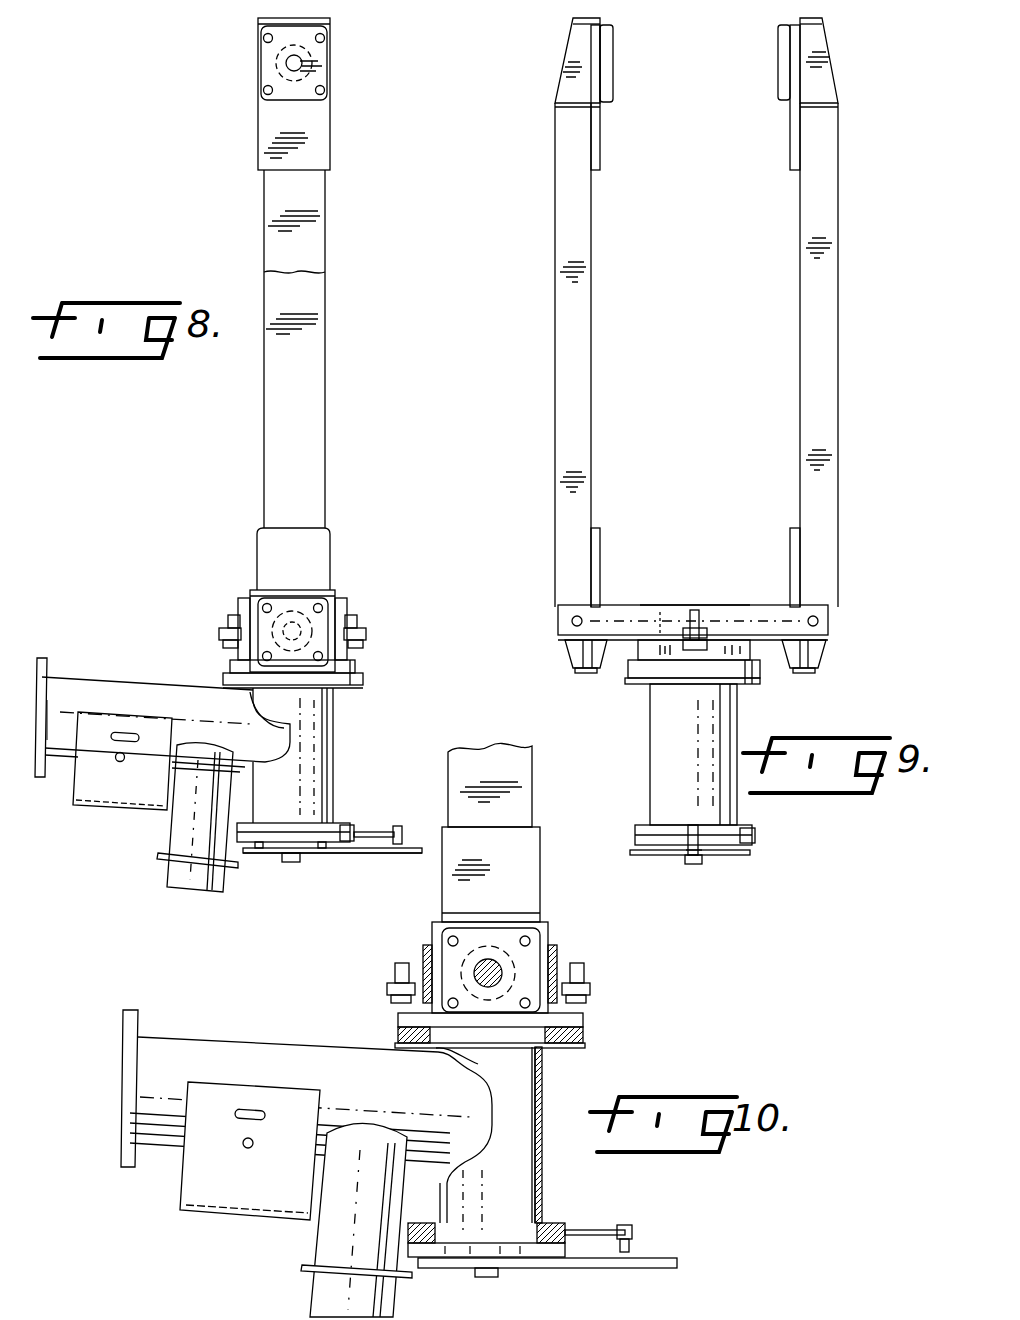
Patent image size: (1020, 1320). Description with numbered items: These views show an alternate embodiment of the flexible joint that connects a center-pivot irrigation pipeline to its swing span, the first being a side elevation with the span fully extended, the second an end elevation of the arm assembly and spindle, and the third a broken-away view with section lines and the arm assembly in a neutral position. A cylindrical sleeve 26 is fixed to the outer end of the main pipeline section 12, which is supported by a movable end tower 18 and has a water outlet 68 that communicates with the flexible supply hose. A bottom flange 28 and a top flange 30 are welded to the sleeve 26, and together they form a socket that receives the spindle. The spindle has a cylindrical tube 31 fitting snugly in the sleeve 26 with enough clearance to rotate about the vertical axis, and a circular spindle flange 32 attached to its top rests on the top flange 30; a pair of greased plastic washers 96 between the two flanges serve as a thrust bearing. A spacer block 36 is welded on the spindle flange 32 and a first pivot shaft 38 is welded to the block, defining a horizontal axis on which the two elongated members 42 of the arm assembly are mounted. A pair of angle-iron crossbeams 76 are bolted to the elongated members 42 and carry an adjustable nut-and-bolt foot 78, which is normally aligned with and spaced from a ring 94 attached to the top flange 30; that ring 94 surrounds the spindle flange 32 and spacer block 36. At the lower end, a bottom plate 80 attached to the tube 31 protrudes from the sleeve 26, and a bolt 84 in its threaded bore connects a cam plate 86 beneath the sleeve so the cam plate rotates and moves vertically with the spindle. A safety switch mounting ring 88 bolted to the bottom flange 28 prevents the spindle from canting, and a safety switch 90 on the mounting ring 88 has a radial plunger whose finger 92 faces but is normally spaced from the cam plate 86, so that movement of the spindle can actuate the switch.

In FIG. 8, the main pipeline section 12 is at (128, 688).
In FIG. 8, the movable end tower 18 is at (82, 772).
In FIG. 8, the cylindrical sleeve 26 is at (334, 765).
In FIG. 10, the cylindrical sleeve 26 is at (543, 1180).
In FIG. 8, the bottom flange 28 is at (344, 826).
In FIG. 9, the bottom flange 28 is at (752, 828).
In FIG. 10, the bottom flange 28 is at (552, 1228).
In FIG. 8, the top flange 30 is at (342, 690).
In FIG. 9, the top flange 30 is at (747, 690).
In FIG. 10, the top flange 30 is at (562, 1048).
In FIG. 10, the cylindrical tube 31 is at (540, 1140).
In FIG. 10, the spindle flange 32 is at (585, 1020).
In FIG. 8, the spacer block 36 is at (287, 690).
In FIG. 9, the spacer block 36 is at (640, 648).
In FIG. 10, the spacer block 36 is at (496, 1056).
In FIG. 8, the first pivot shaft 38 is at (306, 592).
In FIG. 9, the first pivot shaft 38 is at (664, 603).
In FIG. 10, the first pivot shaft 38 is at (488, 960).
In FIG. 8, the elongated members 42 is at (318, 300).
In FIG. 9, the elongated members 42 is at (582, 412).
In FIG. 10, the elongated members 42 is at (530, 805).
In FIG. 8, the water outlet 68 is at (192, 882).
In FIG. 8, the crossbeams 76 is at (246, 607).
In FIG. 9, the crossbeams 76 is at (562, 621).
In FIG. 10, the crossbeams 76 is at (424, 952).
In FIG. 8, the foot 78 is at (222, 625).
In FIG. 9, the foot 78 is at (696, 610).
In FIG. 10, the foot 78 is at (400, 970).
In FIG. 8, the bottom plate 80 is at (276, 856).
In FIG. 10, the bottom plate 80 is at (467, 1260).
In FIG. 8, the bolt 84 is at (295, 864).
In FIG. 9, the bolt 84 is at (698, 866).
In FIG. 10, the bolt 84 is at (487, 1278).
In FIG. 8, the cam plate 86 is at (353, 855).
In FIG. 9, the cam plate 86 is at (748, 855).
In FIG. 10, the cam plate 86 is at (610, 1270).
In FIG. 8, the safety switch mounting ring 88 is at (356, 834).
In FIG. 9, the safety switch mounting ring 88 is at (757, 836).
In FIG. 10, the safety switch mounting ring 88 is at (553, 1258).
In FIG. 8, the safety switch 90 is at (372, 840).
In FIG. 9, the safety switch 90 is at (688, 830).
In FIG. 10, the safety switch 90 is at (598, 1230).
In FIG. 8, the finger 92 is at (402, 832).
In FIG. 9, the finger 92 is at (686, 856).
In FIG. 10, the finger 92 is at (634, 1244).
In FIG. 8, the ring 94 is at (363, 679).
In FIG. 9, the ring 94 is at (650, 670).
In FIG. 10, the ring 94 is at (400, 1032).
In FIG. 10, the plastic washers 96 is at (585, 1036).